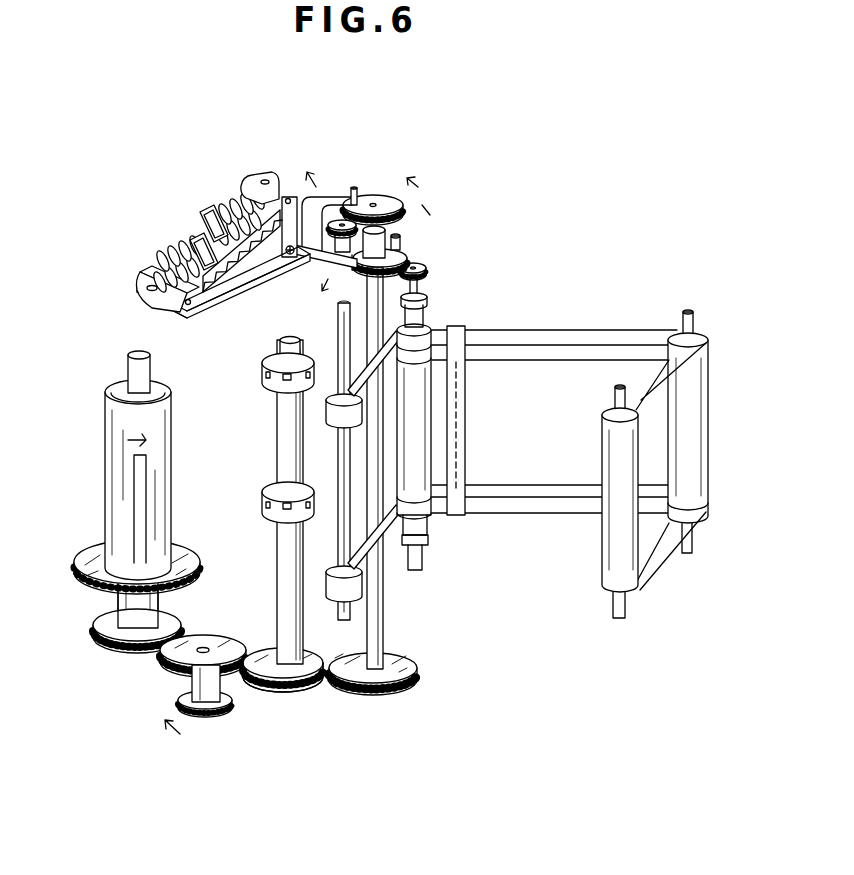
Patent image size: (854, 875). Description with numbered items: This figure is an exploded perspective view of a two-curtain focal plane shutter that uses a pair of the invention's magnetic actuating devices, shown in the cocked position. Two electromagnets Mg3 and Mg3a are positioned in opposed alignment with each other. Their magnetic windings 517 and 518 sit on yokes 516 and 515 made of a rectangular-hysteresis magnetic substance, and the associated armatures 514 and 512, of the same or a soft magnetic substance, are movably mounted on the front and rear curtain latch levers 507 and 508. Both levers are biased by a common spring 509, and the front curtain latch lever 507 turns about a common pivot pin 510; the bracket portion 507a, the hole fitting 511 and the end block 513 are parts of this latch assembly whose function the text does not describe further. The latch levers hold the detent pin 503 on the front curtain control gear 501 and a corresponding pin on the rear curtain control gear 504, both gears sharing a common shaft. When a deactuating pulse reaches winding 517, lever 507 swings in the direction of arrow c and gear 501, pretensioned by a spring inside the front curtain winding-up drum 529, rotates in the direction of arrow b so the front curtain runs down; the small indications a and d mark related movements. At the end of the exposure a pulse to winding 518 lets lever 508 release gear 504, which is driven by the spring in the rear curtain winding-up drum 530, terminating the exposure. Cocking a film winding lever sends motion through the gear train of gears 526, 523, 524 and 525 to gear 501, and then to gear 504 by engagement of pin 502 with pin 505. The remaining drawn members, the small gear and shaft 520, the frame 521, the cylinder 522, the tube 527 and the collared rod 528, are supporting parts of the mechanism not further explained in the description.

The front curtain control gear 501 is at (383, 190).
The pin 502 is at (400, 227).
The detent pin 503 is at (362, 190).
The rear curtain control gear 504 is at (403, 257).
The pin 505 is at (400, 247).
The front curtain latch lever 507 is at (203, 303).
The bracket arm 507a is at (337, 200).
The rear curtain latch lever 508 is at (321, 264).
The common spring 509 is at (233, 283).
The common pivot pin 510 is at (293, 257).
The end block 511 is at (272, 178).
The armature 512 is at (257, 173).
The end block 513 is at (147, 292).
The armature 514 is at (152, 304).
The yoke 515 is at (200, 218).
The yoke 516 is at (193, 240).
The magnetic winding 517 is at (160, 262).
The magnetic winding 518 is at (217, 200).
The gear and shaft 520 is at (423, 277).
The frame 521 is at (557, 377).
The cylinder 522 is at (440, 480).
The gear 523 is at (197, 687).
The gear 524 is at (280, 687).
The gear 525 is at (383, 707).
The gear 526 is at (120, 650).
The tube 527 is at (120, 487).
The rod with collars 528 is at (262, 510).
The front curtain winding-up drum 529 is at (687, 420).
The rear curtain winding-up drum 530 is at (607, 550).
The electromagnet Mg3 is at (176, 251).
The electromagnet Mg3a is at (247, 187).
The direction a is at (429, 215).
The arrow b is at (419, 172).
The arrow c is at (315, 176).
The direction d is at (331, 288).